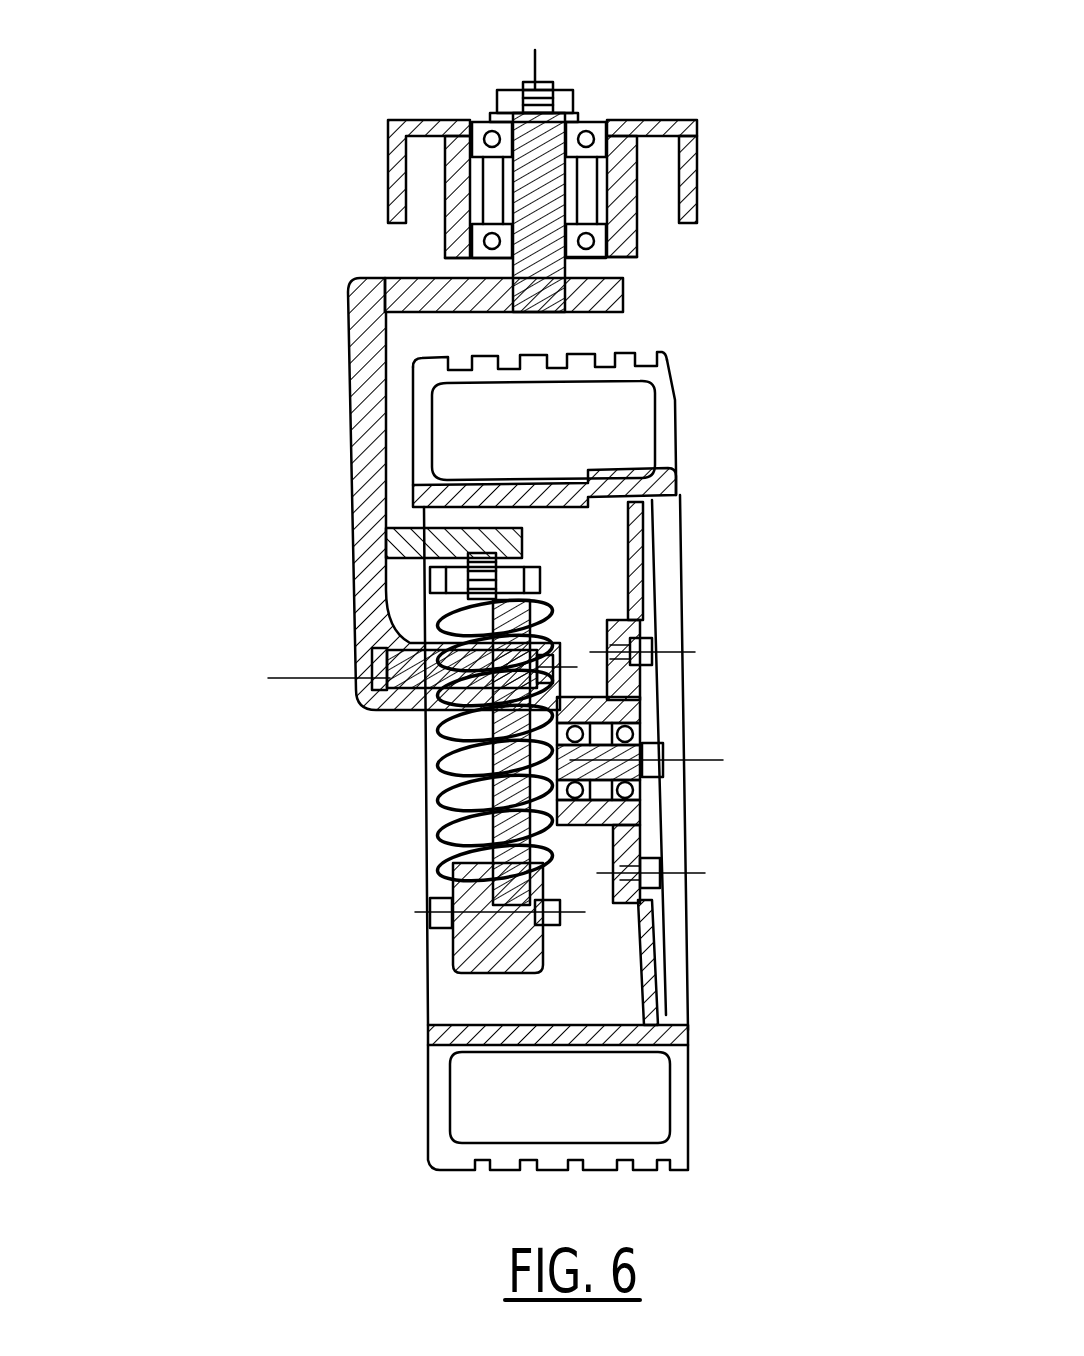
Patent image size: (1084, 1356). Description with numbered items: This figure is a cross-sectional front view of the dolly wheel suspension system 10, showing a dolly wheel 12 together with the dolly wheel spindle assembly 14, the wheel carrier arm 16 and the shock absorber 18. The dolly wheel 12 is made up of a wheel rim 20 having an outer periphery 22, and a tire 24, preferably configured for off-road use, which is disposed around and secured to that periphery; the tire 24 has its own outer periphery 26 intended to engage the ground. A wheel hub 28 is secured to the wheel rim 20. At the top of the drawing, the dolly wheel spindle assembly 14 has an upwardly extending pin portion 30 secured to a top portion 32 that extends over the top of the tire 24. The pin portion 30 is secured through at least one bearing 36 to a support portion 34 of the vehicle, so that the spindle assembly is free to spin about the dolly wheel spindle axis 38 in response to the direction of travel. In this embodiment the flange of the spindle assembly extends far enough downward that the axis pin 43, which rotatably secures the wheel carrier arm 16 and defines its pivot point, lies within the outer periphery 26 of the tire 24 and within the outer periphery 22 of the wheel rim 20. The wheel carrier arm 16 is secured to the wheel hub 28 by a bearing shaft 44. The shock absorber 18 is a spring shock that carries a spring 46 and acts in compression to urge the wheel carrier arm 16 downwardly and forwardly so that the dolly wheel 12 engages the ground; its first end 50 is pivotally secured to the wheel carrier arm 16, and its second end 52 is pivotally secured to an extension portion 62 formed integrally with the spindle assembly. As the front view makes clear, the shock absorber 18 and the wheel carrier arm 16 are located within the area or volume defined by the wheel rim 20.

The wheel suspension system 10 is at (180, 380).
The dolly wheel 12 is at (704, 545).
The dolly wheel spindle assembly 14 is at (347, 295).
The wheel carrier arm 16 is at (450, 957).
The shock absorber 18 is at (430, 775).
The wheel rim 20 is at (675, 470).
The outer periphery of the wheel rim 22 is at (592, 1020).
The tire 24 is at (670, 367).
The outer periphery of the tire 26 is at (633, 347).
The wheel hub 28 is at (640, 703).
The pin portion 30 is at (552, 160).
The top portion 32 is at (435, 268).
The support portion 34 is at (700, 128).
The bearing 36 is at (490, 127).
The dolly wheel spindle axis 38 is at (535, 85).
The axis pin 43 is at (375, 658).
The bearing shaft 44 is at (642, 750).
The spring 46 is at (440, 738).
The first end of the shock absorber 50 is at (440, 852).
The second end of the shock absorber 52 is at (440, 587).
The extension portion 62 is at (495, 530).